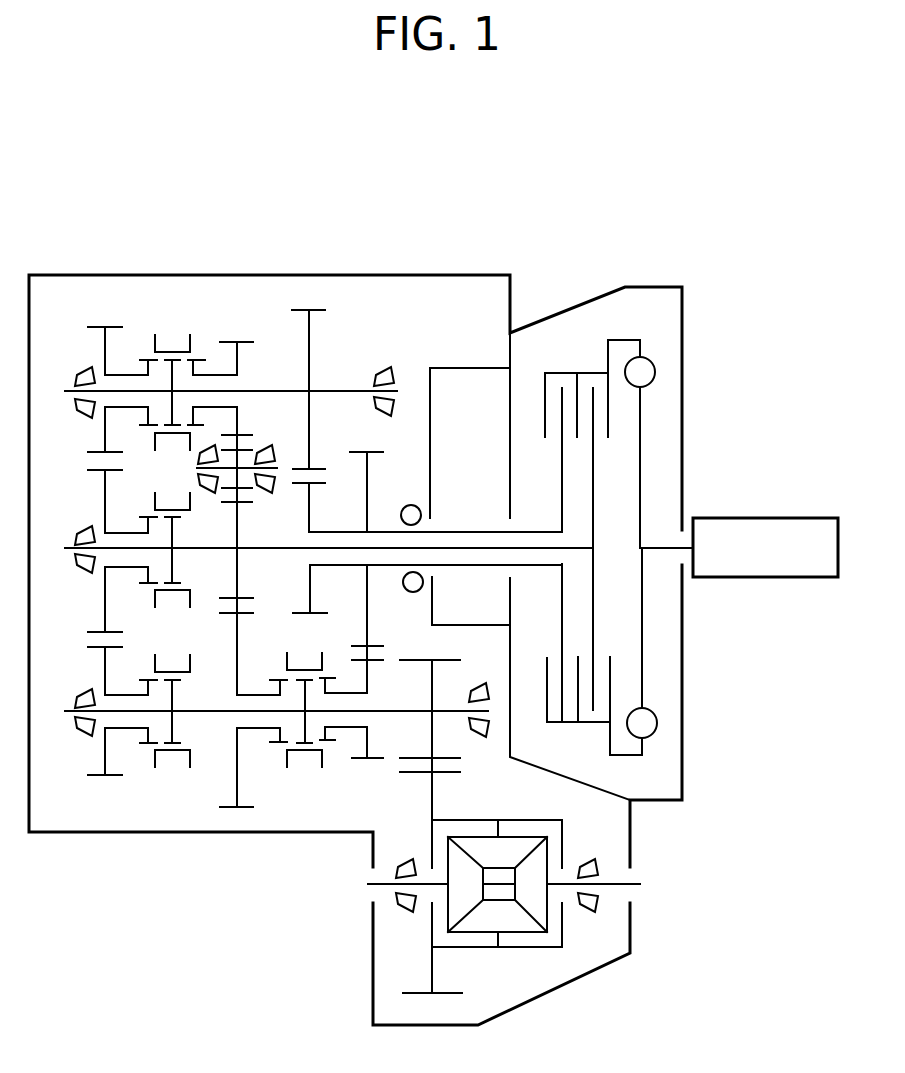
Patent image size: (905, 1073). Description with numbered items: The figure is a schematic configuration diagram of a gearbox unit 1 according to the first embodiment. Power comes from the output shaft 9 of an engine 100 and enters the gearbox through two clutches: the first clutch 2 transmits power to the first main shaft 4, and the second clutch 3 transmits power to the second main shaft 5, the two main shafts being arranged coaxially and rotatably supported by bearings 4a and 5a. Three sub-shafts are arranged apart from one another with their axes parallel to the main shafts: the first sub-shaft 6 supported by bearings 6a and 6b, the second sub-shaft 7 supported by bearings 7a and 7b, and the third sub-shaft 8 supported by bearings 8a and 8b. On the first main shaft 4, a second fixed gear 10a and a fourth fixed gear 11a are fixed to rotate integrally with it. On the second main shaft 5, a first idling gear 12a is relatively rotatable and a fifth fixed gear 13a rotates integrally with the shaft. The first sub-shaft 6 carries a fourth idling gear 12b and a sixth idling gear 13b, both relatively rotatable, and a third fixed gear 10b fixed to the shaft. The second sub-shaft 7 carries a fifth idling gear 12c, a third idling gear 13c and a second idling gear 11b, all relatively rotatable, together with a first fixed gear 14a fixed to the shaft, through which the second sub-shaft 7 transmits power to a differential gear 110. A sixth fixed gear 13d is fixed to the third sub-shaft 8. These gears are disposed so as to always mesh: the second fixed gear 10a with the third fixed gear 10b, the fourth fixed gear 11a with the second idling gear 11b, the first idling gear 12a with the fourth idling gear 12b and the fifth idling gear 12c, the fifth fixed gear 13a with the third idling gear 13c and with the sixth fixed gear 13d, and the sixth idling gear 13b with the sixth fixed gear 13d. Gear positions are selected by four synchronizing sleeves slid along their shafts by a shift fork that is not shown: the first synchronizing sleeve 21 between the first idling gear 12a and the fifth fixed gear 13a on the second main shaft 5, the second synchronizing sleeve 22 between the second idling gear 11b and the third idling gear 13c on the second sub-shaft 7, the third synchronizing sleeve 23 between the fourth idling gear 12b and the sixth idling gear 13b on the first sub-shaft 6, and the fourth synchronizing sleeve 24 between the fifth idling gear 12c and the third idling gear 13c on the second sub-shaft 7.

The gearbox unit 1 is at (580, 223).
The first clutch 2 is at (556, 372).
The second clutch 3 is at (592, 372).
The first main shaft 4 is at (535, 530).
The bearing 4a is at (409, 504).
The second main shaft 5 is at (480, 546).
The bearing 5a is at (80, 530).
The first sub-shaft 6 is at (329, 388).
The bearing 6a is at (385, 366).
The bearing 6b is at (82, 412).
The second sub-shaft 7 is at (392, 707).
The bearing 7a is at (480, 732).
The bearing 7b is at (82, 727).
The third sub-shaft 8 is at (253, 462).
The bearing 8a is at (268, 452).
The bearing 8b is at (195, 460).
The output shaft 9 is at (662, 546).
The second fixed gear 10a is at (316, 490).
The third fixed gear 10b is at (328, 308).
The fourth fixed gear 11a is at (360, 448).
The second idling gear 11b is at (367, 760).
The first idling gear 12a is at (95, 632).
The fourth idling gear 12b is at (103, 324).
The fifth idling gear 12c is at (103, 777).
The fifth fixed gear 13a is at (250, 500).
The sixth idling gear 13b is at (236, 340).
The third idling gear 13c is at (230, 808).
The sixth fixed gear 13d is at (227, 502).
The first fixed gear 14a is at (447, 657).
The first synchronizing sleeve 21 is at (172, 598).
The second synchronizing sleeve 22 is at (305, 762).
The third synchronizing sleeve 23 is at (168, 345).
The fourth synchronizing sleeve 24 is at (165, 756).
The engine 100 is at (806, 516).
The differential gear 110 is at (515, 948).